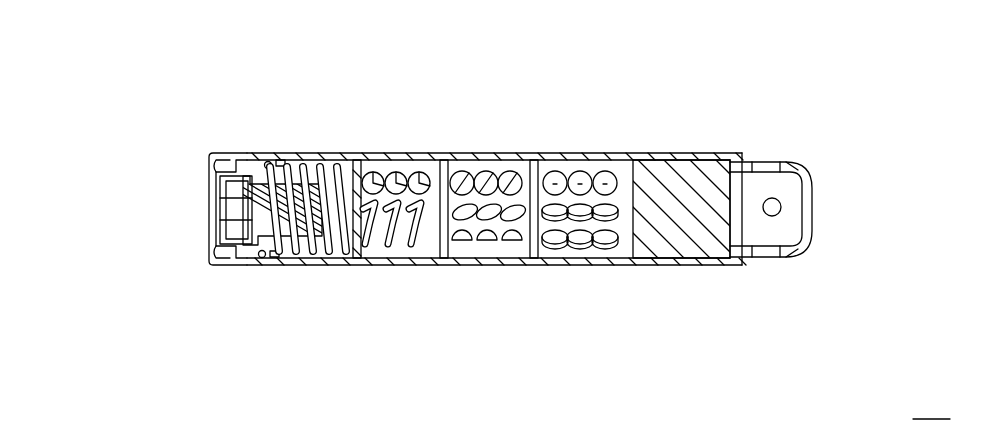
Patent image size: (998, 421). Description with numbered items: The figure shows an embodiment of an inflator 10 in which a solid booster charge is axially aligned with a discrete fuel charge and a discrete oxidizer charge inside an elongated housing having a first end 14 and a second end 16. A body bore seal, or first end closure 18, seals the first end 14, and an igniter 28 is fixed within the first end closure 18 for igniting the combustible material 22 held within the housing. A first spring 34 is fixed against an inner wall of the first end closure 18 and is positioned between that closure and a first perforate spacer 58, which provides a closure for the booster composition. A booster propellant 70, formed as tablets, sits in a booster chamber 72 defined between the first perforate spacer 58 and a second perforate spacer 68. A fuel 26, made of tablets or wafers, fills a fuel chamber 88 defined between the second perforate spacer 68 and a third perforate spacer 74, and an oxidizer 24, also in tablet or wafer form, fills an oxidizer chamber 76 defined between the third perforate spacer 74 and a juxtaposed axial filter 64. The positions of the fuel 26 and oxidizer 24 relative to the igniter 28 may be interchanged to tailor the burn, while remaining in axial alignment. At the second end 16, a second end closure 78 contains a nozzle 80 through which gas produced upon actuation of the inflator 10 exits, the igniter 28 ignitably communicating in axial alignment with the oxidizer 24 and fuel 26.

The inflator 10 is at (571, 220).
The first end 14 is at (508, 220).
The second end 16 is at (843, 196).
The first end closure 18 is at (175, 233).
The combustible material 22 is at (525, 204).
The oxidizer 24 is at (469, 204).
The fuel 26 is at (621, 149).
The igniter 28 is at (230, 218).
The first spring 34 is at (264, 181).
The first perforate spacer 58 is at (326, 181).
The axial filter 64 is at (687, 172).
The second perforate spacer 68 is at (458, 152).
The booster propellant 70 is at (396, 157).
The booster chamber 72 is at (479, 268).
The third perforate spacer 74 is at (567, 152).
The oxidizer chamber 76 is at (440, 280).
The second end closure 78 is at (843, 180).
The nozzle 80 is at (847, 243).
The fuel chamber 88 is at (620, 159).